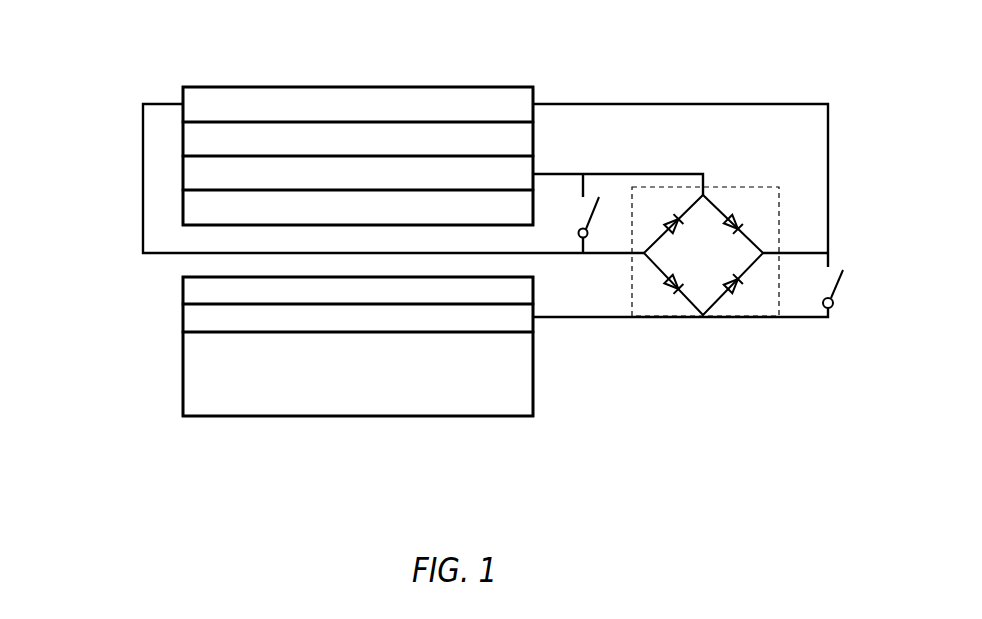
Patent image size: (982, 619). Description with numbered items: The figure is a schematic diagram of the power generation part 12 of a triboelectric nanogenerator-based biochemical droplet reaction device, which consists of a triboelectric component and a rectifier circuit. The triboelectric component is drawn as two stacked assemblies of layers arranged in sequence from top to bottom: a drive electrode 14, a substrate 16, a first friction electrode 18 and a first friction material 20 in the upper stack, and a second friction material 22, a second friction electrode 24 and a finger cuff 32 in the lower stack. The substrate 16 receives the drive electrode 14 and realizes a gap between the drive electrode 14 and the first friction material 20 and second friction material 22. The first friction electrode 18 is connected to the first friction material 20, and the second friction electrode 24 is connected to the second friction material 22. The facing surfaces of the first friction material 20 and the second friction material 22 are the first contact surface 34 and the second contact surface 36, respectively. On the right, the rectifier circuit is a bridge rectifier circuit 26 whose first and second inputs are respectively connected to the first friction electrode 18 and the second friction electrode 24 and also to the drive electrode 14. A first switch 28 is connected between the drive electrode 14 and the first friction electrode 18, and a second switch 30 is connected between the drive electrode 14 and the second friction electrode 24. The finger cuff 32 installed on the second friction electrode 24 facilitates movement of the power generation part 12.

The power generation part 12 is at (365, 67).
The drive electrode 14 is at (238, 102).
The substrate 16 is at (220, 142).
The first friction electrode 18 is at (218, 182).
The first friction material 20 is at (197, 212).
The second friction material 22 is at (192, 292).
The second friction electrode 24 is at (232, 318).
The bridge rectifier circuit 26 is at (732, 187).
The first switch 28 is at (596, 203).
The second switch 30 is at (833, 312).
The finger cuff 32 is at (233, 385).
The first contact surface 34 is at (316, 224).
The second contact surface 36 is at (330, 277).